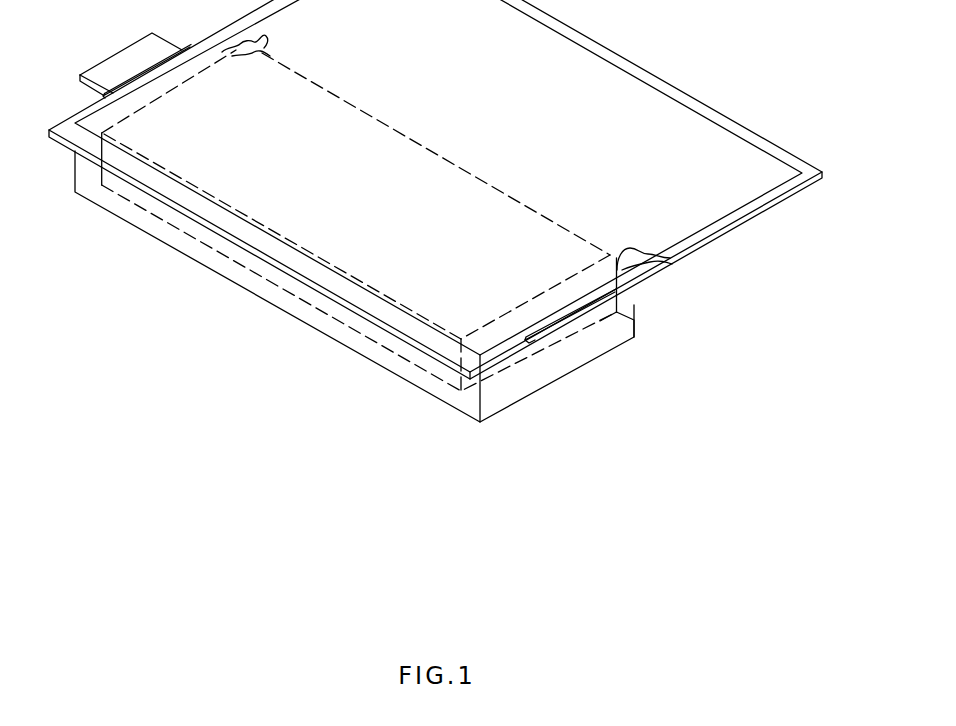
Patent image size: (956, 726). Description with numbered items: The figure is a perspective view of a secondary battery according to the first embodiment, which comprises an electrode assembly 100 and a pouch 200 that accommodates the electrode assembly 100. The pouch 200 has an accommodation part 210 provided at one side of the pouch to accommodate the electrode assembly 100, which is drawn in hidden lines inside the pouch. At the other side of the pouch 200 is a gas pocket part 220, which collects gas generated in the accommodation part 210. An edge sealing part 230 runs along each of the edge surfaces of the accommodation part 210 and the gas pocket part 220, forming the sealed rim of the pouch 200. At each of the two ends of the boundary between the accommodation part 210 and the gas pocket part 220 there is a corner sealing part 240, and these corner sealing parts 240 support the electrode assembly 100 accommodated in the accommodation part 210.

The electrode assembly 100 is at (511, 376).
The pouch 200 is at (435, 241).
The accommodation part 210 is at (545, 290).
The gas pocket part 220 is at (723, 203).
The edge sealing part 230 is at (698, 238).
The corner sealing part 240 is at (641, 258).